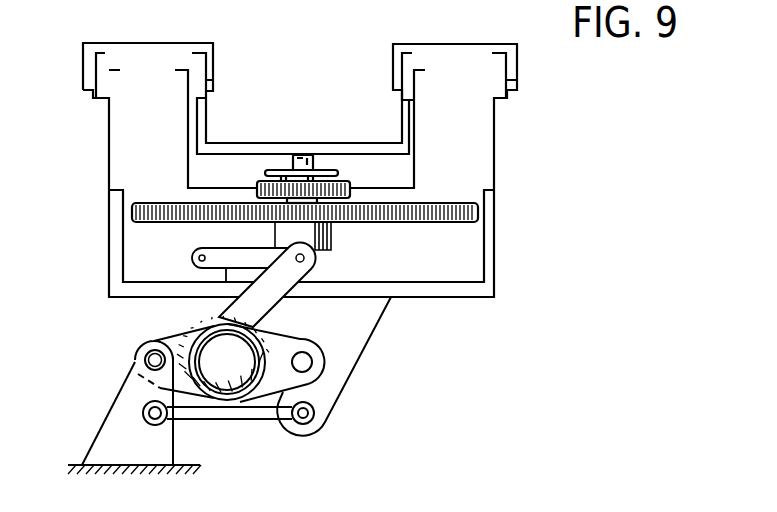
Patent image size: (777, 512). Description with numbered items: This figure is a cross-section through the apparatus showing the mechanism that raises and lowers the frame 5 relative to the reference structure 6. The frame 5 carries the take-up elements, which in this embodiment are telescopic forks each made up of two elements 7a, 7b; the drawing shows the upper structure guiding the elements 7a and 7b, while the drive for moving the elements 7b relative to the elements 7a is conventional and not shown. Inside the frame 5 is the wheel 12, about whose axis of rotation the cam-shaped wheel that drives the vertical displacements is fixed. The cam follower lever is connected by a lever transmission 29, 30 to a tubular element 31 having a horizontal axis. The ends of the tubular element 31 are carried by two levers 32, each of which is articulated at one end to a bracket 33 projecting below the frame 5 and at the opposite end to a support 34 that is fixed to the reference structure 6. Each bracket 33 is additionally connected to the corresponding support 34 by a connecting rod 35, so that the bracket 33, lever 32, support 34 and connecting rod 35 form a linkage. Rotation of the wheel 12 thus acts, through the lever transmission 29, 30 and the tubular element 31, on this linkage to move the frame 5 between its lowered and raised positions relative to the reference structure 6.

The frame 5 is at (495, 164).
The element of telescopic fork 7a is at (214, 86).
The element of telescopic fork 7b is at (214, 66).
The wheel 12 is at (460, 222).
The lever transmission 29 is at (262, 253).
The lever transmission 30 is at (268, 296).
The tubular element 31 is at (198, 327).
The lever 32 is at (283, 376).
The bracket 33 is at (338, 347).
The support 34 is at (116, 424).
The connecting rod 35 is at (243, 414).
The reference structure 6 is at (178, 464).